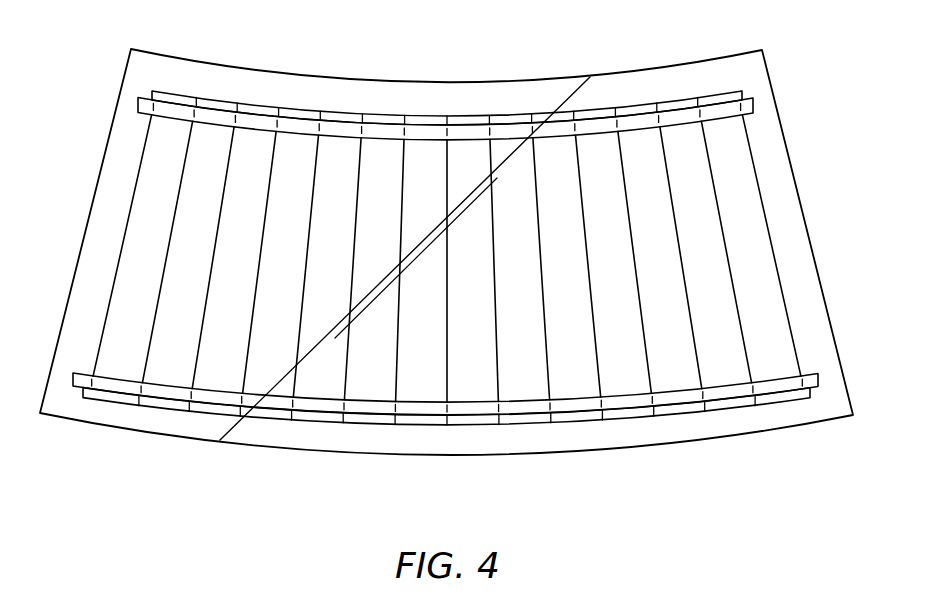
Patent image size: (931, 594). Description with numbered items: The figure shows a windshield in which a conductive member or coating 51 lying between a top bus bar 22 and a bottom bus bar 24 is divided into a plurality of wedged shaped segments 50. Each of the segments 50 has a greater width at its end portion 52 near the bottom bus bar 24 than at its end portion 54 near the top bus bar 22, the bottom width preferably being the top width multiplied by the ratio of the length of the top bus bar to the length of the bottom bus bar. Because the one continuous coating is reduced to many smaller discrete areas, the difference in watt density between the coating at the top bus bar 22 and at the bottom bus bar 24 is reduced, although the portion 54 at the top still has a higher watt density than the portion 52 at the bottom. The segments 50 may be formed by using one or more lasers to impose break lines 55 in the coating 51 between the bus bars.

The top bus bar 22 is at (137, 101).
The bottom bus bar 24 is at (72, 382).
The wedged shaped segments 50 is at (268, 285).
The conductive member or coating 51 is at (761, 158).
The end portion near the bottom bus bar 52 is at (472, 393).
The end portion near the top bus bar 54 is at (508, 150).
The break lines 55 is at (243, 353).